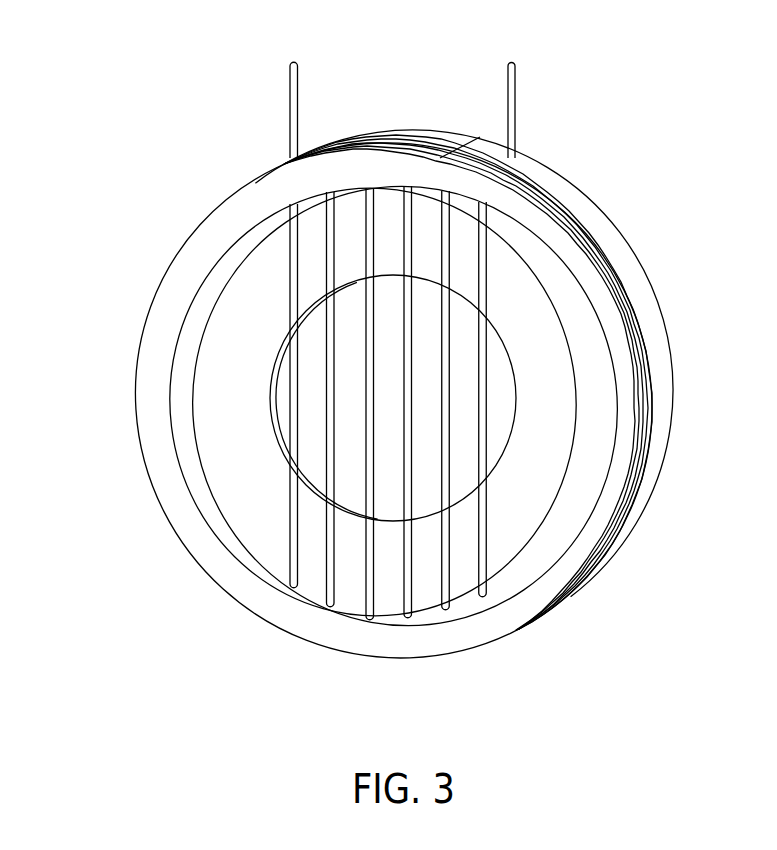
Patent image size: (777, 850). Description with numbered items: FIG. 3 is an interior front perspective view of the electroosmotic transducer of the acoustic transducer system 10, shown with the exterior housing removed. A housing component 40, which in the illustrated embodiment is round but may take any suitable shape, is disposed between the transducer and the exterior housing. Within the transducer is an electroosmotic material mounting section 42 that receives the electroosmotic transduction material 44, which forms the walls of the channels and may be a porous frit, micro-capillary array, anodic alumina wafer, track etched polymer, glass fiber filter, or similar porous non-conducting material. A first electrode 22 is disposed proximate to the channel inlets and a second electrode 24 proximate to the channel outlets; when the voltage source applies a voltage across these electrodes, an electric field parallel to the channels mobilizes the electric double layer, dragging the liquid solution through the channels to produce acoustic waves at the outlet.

The acoustic transducer system 10 is at (96, 96).
The first electrode 22 is at (287, 90).
The second electrode 24 is at (517, 110).
The housing component 40 is at (654, 318).
The electroosmotic material mounting section 42 is at (226, 338).
The electroosmotic transduction material 44 is at (355, 472).